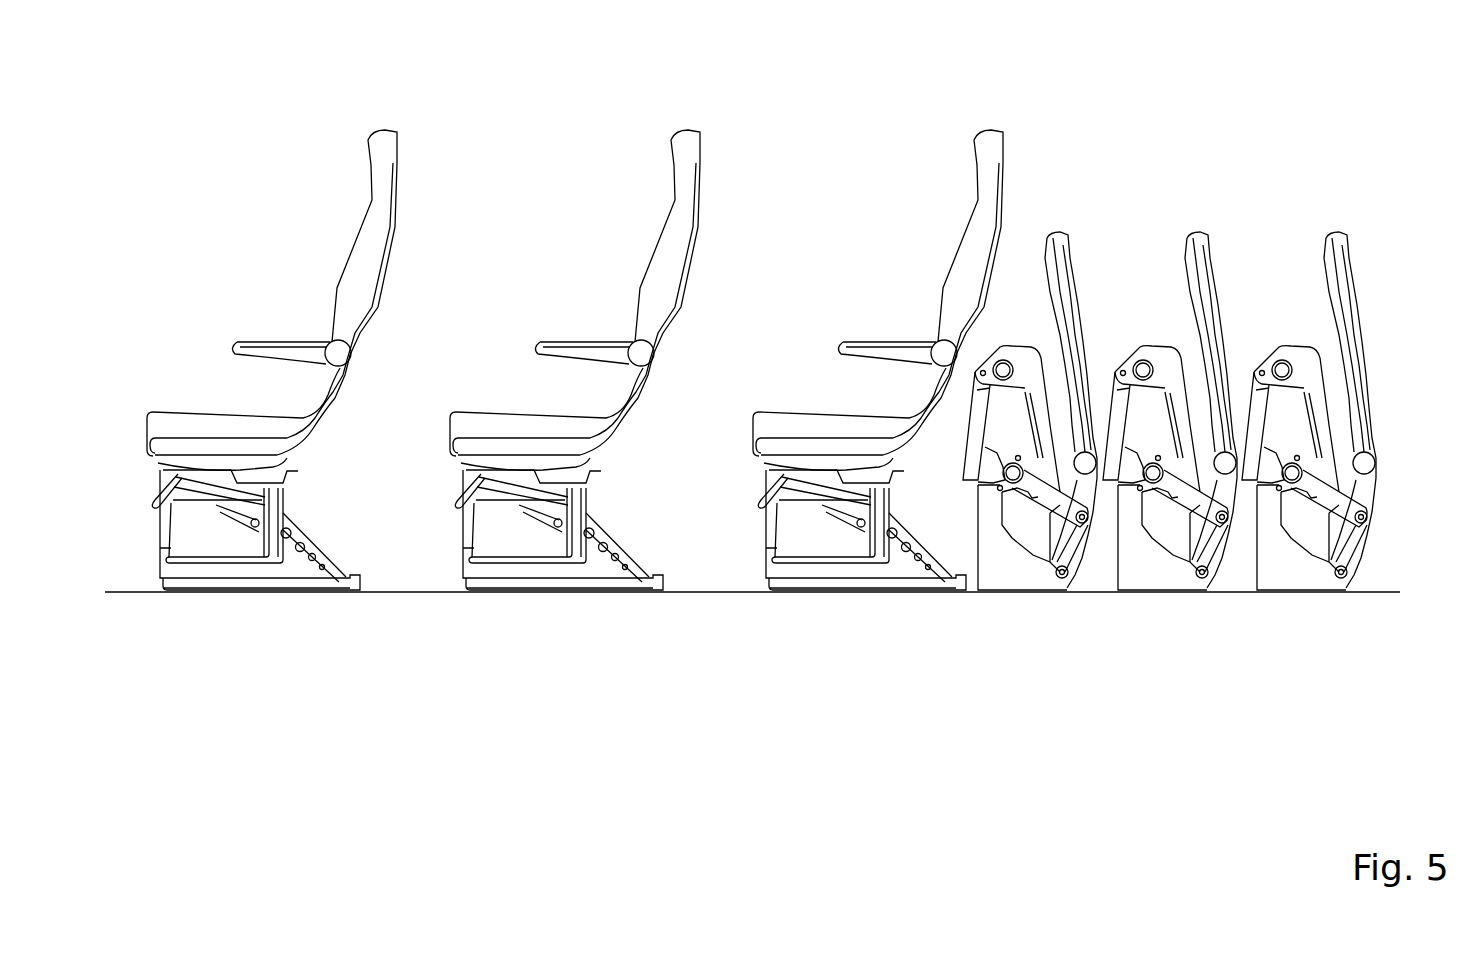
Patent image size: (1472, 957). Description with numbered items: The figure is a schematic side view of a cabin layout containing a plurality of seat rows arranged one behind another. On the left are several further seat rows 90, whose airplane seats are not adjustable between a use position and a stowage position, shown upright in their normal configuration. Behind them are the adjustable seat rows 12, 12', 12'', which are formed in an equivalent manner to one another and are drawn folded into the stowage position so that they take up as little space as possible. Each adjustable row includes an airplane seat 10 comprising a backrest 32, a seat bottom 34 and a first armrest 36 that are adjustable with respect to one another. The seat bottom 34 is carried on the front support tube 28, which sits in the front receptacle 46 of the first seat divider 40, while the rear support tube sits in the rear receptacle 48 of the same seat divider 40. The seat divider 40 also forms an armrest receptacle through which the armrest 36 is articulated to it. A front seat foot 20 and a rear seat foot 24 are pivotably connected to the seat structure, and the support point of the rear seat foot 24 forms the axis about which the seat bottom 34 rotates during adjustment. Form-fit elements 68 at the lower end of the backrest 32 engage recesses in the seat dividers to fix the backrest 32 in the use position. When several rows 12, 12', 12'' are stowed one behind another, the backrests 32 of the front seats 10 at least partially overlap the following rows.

The further seat rows 90 is at (936, 150).
The airplane seat 10 is at (966, 381).
The seat row 12 is at (966, 406).
The seat row 12' is at (1170, 368).
The seat row 12'' is at (1309, 368).
The front seat foot 20 is at (953, 359).
The rear seat foot 24 is at (988, 566).
The front support tube 28 is at (994, 374).
The backrest 32 is at (1062, 257).
The seat bottom 34 is at (1011, 359).
The first armrest 36 is at (1028, 493).
The first seat divider 40 is at (1007, 465).
The front receptacle 46 is at (984, 368).
The rear receptacle 48 is at (1001, 492).
The form-fit elements 68 is at (1067, 572).